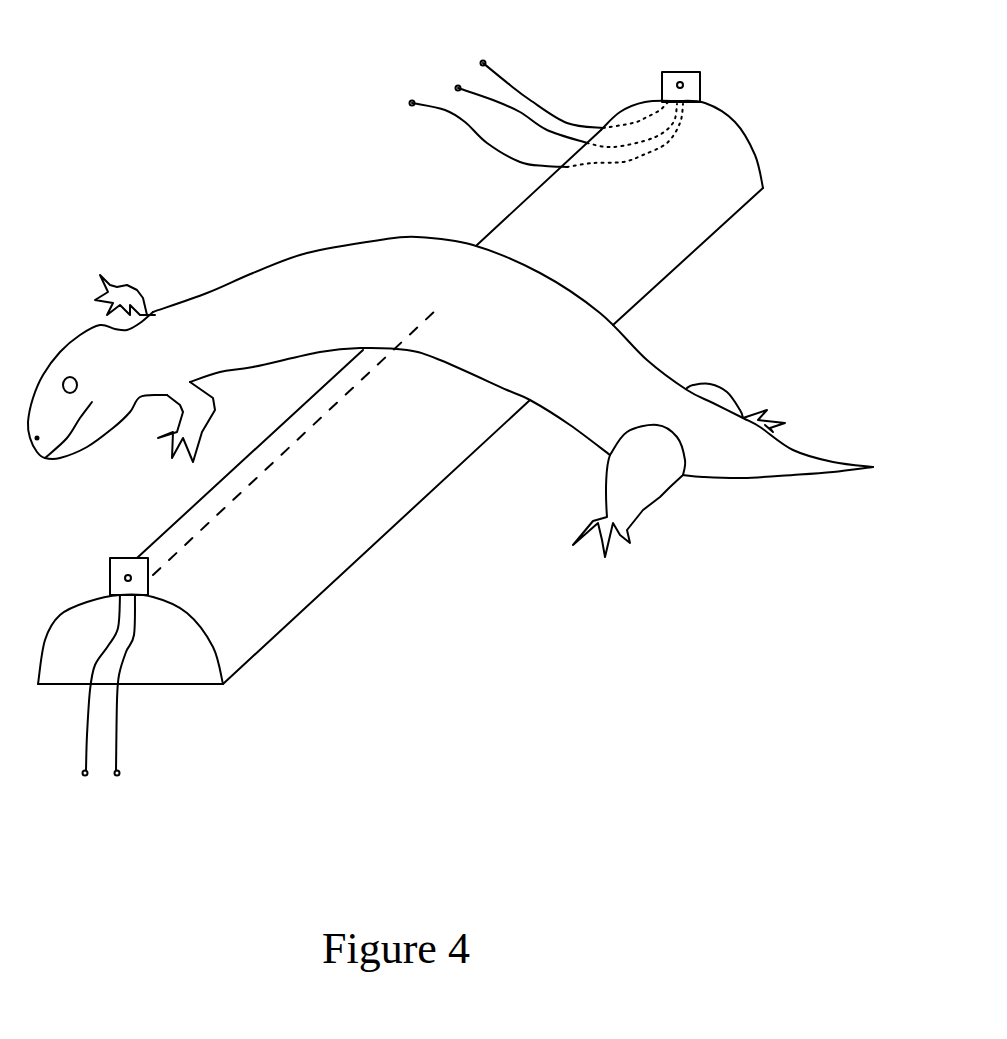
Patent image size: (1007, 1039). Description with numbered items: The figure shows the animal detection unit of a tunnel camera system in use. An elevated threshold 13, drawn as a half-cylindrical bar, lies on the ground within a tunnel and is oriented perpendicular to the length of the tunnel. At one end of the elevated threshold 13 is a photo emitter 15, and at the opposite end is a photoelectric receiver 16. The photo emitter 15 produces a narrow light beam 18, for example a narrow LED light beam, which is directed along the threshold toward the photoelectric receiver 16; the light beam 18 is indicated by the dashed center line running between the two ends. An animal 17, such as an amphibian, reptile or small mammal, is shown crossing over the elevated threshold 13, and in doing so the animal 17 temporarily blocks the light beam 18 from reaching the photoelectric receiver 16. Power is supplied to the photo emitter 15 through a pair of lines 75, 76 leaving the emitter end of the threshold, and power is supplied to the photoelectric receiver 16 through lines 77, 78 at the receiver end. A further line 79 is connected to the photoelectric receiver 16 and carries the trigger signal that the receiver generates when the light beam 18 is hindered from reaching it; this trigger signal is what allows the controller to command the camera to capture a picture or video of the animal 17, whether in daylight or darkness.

The elevated threshold 13 is at (693, 252).
The photo emitter 15 is at (110, 573).
The photoelectric receiver 16 is at (700, 82).
The animal 17 is at (310, 252).
The light beam 18 is at (332, 412).
The line 75 is at (85, 737).
The line 76 is at (120, 723).
The line 77 is at (557, 135).
The line 78 is at (532, 103).
The line 79 is at (457, 115).